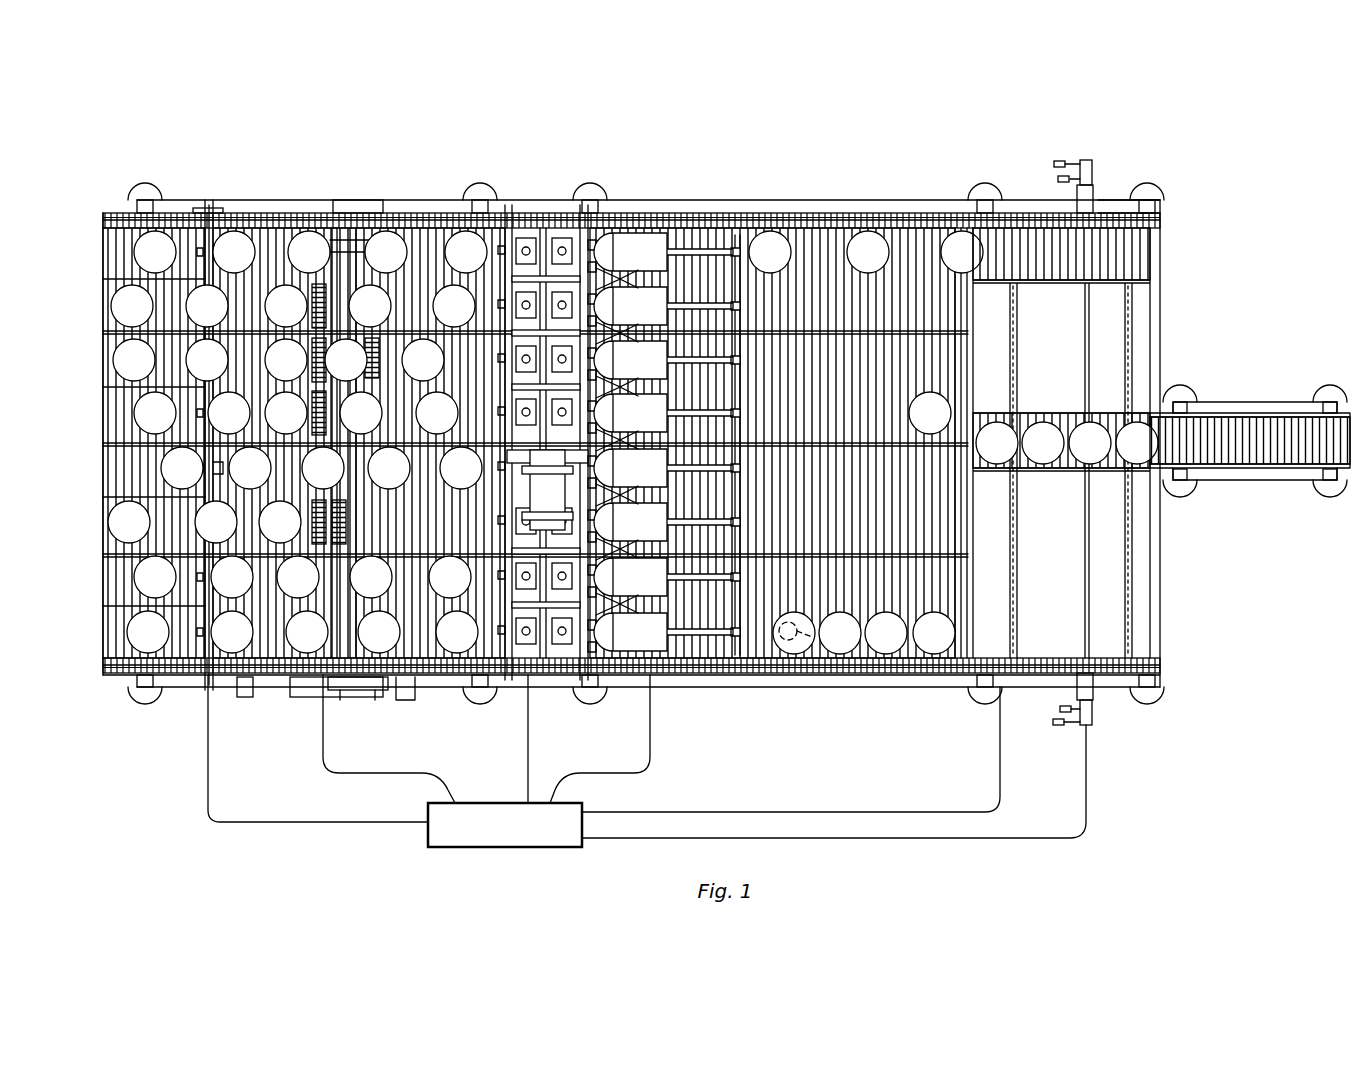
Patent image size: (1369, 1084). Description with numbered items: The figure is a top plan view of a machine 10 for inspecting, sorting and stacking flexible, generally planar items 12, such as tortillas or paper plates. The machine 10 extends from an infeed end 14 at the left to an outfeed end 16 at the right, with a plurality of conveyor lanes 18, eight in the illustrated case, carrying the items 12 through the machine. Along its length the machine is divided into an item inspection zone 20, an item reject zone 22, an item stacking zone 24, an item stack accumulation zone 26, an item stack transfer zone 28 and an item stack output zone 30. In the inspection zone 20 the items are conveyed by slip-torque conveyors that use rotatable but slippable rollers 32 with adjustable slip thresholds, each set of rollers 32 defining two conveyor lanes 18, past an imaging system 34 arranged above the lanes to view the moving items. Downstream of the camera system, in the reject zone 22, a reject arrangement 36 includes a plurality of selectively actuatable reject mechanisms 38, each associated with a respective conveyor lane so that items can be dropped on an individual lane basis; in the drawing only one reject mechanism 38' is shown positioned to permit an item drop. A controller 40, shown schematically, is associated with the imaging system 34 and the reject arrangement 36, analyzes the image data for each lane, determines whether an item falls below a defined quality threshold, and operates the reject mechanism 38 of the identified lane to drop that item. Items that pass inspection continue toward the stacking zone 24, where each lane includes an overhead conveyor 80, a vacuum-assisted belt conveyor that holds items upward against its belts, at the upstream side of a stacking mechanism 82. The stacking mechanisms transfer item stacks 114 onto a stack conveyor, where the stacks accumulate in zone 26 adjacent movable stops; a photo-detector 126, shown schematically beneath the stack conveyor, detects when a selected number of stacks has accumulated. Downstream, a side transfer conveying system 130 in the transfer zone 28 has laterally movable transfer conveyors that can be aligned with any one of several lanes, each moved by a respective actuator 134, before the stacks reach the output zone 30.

The machine 10 is at (1278, 190).
The items 12 is at (305, 247).
The infeed end 14 is at (100, 166).
The outfeed end 16 is at (1338, 368).
The conveyor lanes 18 is at (98, 252).
The item inspection zone 20 is at (222, 185).
The item reject zone 22 is at (352, 185).
The item stacking zone 24 is at (553, 190).
The item stack accumulation zone 26 is at (790, 187).
The item stack transfer zone 28 is at (1015, 190).
The item stack output zone 30 is at (1250, 380).
The rollers 32 is at (105, 224).
The imaging system 34 is at (197, 222).
The reject arrangement 36 is at (370, 190).
The reject mechanisms 38 is at (390, 455).
The reject mechanism 38' is at (426, 702).
The controller 40 is at (483, 848).
The overhead conveyor 80 is at (540, 226).
The stacking mechanism 82 is at (620, 234).
The item stacks 114 is at (882, 240).
The photo-detector 126 is at (802, 660).
The side transfer conveying system 130 is at (1118, 192).
The actuator 134 is at (1094, 190).